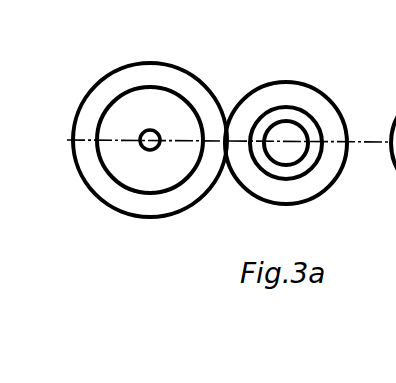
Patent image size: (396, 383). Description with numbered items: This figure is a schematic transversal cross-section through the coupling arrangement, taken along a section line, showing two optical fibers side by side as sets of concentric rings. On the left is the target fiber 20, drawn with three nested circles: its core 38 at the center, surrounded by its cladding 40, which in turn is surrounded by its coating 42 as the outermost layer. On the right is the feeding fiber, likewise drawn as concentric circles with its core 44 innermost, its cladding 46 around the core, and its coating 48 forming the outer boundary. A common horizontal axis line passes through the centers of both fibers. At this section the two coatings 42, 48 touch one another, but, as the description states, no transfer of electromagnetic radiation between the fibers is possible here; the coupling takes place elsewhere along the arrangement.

The target fiber 20 is at (231, 178).
The core 38 is at (182, 100).
The cladding 40 is at (163, 178).
The coating 42 is at (182, 204).
The core 44 is at (266, 124).
The cladding 46 is at (285, 110).
The coating 48 is at (313, 108).